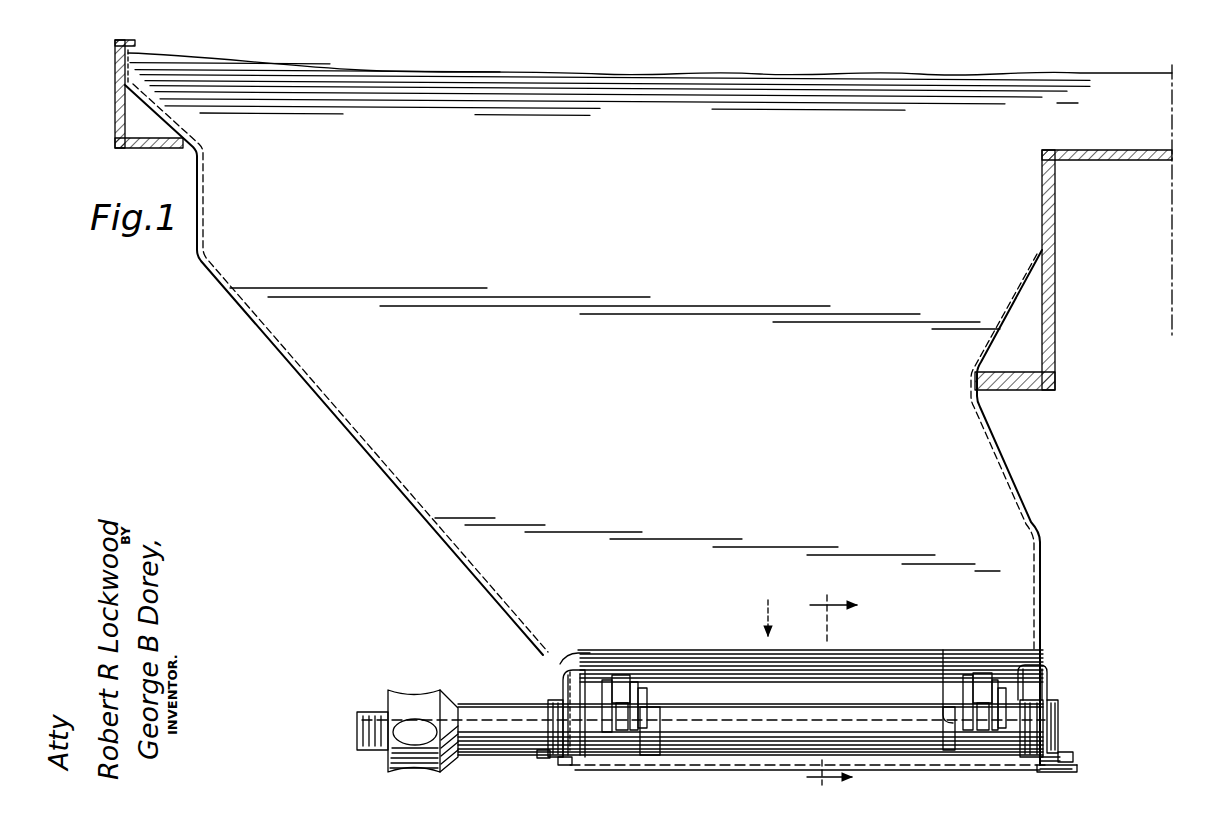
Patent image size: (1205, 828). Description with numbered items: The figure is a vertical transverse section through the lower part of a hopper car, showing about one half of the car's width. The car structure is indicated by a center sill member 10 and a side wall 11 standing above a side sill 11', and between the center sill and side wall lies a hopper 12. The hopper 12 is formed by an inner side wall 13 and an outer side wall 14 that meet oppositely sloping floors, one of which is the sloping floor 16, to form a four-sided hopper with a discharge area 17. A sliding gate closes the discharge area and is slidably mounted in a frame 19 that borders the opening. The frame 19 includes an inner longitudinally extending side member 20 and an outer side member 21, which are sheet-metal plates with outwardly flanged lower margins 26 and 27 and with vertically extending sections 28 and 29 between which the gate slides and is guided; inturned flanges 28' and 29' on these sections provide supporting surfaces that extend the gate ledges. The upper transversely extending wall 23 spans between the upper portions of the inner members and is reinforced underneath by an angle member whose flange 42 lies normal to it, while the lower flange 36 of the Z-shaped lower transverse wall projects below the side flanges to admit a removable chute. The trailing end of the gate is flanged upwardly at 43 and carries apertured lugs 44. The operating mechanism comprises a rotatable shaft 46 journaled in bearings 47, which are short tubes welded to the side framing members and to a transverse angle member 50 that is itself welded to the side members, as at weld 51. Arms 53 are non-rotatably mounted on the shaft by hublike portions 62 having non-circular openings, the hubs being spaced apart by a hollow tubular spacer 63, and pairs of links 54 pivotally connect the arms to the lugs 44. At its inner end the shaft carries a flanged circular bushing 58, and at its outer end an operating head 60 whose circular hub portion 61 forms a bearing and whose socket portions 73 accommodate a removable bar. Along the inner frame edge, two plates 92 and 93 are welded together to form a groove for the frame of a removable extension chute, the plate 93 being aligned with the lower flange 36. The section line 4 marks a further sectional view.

The center sill member 10 is at (1055, 302).
The side wall 11 is at (121, 93).
The side sill 11' is at (104, 76).
The hopper 12 is at (332, 436).
The inner side wall 13 is at (1043, 547).
The outer side wall 14 is at (440, 539).
The sloping floor 16 is at (748, 451).
The discharge area 17 is at (771, 608).
The frame 19 is at (1068, 642).
The inner longitudinally extending side member 20 is at (1047, 652).
The outer longitudinally extending side member 21 is at (560, 662).
The upper transversely extending wall 23 is at (943, 700).
The outwardly flanged lower margin 26 is at (1066, 753).
The outwardly flanged lower margin 27 is at (540, 755).
The vertically extending section 28 is at (1056, 677).
The inturned flange 28' is at (1054, 626).
The vertically extending section 29 is at (547, 710).
The inturned flange 29' is at (553, 639).
The lower flange 36 is at (1073, 772).
The section line 4- 4 is at (820, 684).
The flange 42 is at (705, 660).
The upwardly flanged trailing end 43 is at (850, 680).
The lugs 44 is at (634, 682).
The rotatable shaft 46 is at (896, 722).
The bearings 47 is at (552, 705).
The angle member 50 is at (580, 762).
The weld 51 is at (643, 688).
The arms 53 is at (621, 675).
The links 54 is at (605, 680).
The flanged circular bushing 58 is at (1059, 707).
The operating head 60 is at (452, 708).
The hub portion 61 is at (574, 668).
The hublike portions 62 is at (656, 707).
The hollow tubular spacer 63 is at (800, 722).
The socket portions 73 is at (398, 700).
The plate 92 is at (1074, 758).
The plate 93 is at (1078, 766).